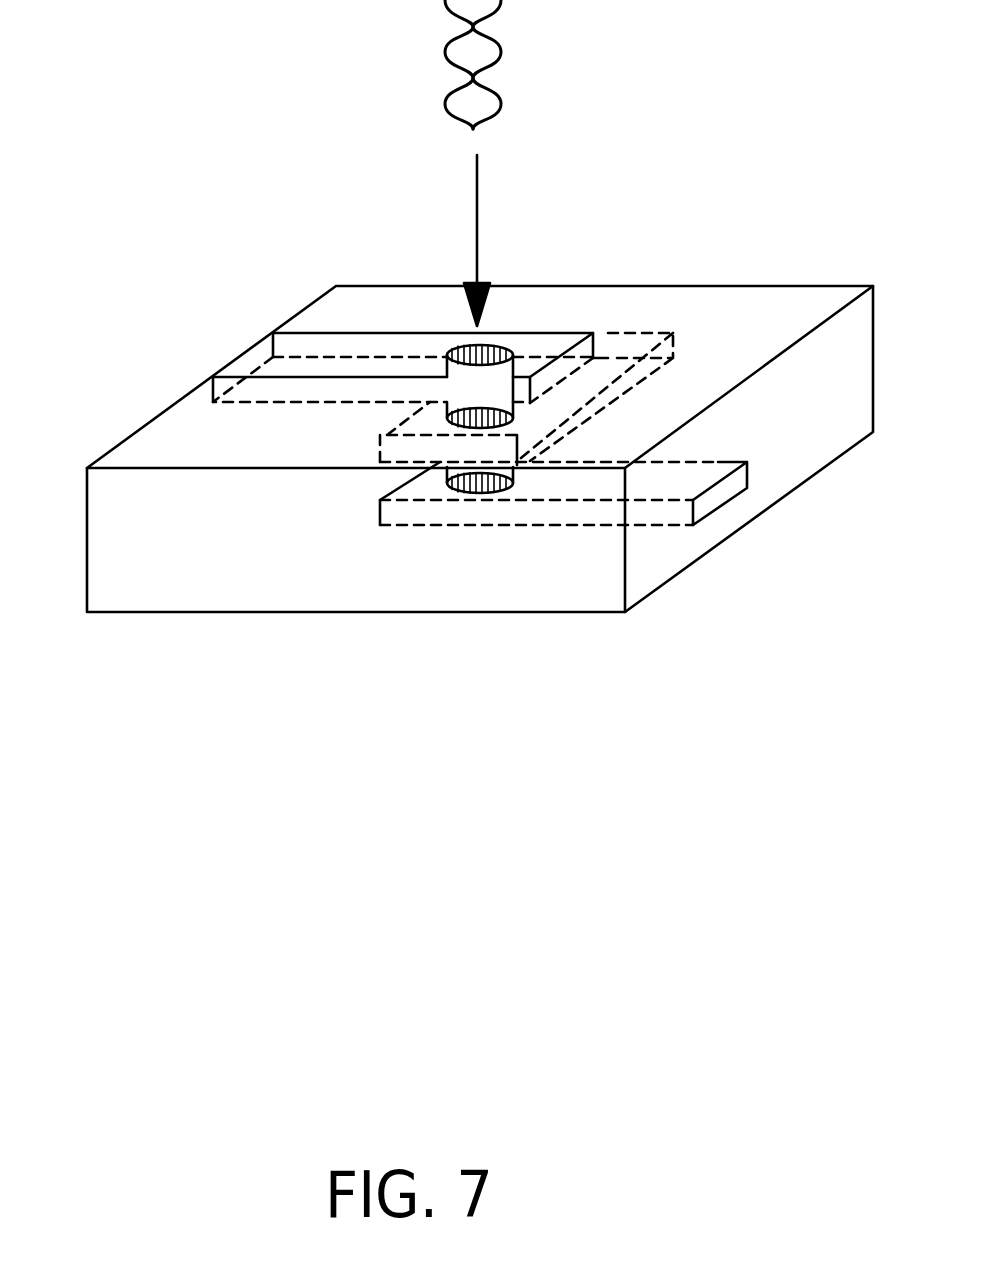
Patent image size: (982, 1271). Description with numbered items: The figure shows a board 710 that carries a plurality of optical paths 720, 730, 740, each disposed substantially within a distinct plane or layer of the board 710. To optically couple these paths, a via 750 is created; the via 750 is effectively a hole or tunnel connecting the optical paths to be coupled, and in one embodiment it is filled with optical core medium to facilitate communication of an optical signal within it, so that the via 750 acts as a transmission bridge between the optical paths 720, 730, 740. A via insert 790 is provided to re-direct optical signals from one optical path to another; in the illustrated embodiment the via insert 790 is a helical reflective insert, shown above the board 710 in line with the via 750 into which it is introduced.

The board 710 is at (90, 346).
The optical path 720 is at (253, 358).
The optical path 730 is at (622, 337).
The optical path 740 is at (715, 497).
The via 750 is at (456, 347).
The via insert 790 is at (438, 50).